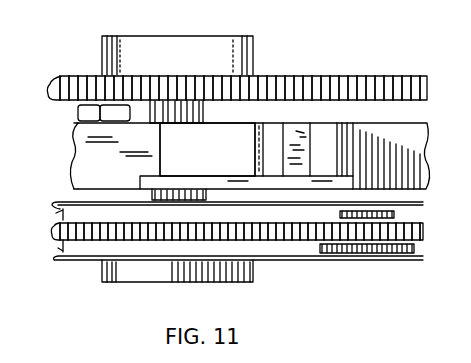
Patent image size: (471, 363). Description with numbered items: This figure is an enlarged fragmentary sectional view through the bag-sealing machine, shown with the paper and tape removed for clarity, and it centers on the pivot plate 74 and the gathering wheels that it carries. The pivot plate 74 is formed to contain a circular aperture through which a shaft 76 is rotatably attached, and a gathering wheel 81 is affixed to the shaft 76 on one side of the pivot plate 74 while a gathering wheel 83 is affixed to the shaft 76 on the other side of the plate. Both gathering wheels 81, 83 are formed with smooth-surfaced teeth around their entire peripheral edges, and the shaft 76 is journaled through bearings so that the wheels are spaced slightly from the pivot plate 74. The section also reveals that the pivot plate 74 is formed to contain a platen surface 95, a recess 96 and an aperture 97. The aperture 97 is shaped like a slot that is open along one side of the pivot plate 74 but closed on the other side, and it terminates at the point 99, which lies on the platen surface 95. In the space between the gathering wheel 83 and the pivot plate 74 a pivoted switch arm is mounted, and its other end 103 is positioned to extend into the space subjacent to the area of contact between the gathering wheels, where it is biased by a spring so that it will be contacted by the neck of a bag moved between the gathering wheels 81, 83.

The gathering wheel 83 is at (316, 86).
The other end of switch arm 103 is at (80, 111).
The shaft 76 is at (203, 117).
The pivot plate 74 is at (88, 170).
The platen surface 95 is at (237, 131).
The aperture 97 is at (258, 146).
The terminating point of aperture 99 is at (267, 139).
The recess 96 is at (312, 126).
The gathering wheel 81 is at (421, 233).